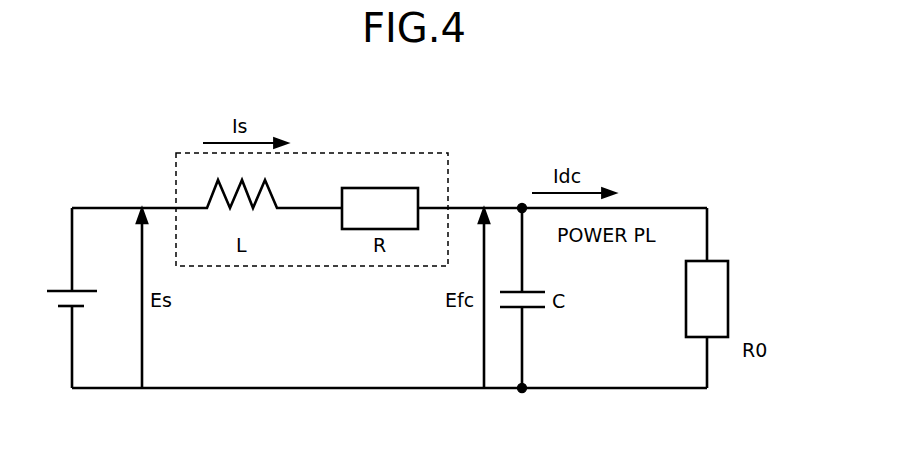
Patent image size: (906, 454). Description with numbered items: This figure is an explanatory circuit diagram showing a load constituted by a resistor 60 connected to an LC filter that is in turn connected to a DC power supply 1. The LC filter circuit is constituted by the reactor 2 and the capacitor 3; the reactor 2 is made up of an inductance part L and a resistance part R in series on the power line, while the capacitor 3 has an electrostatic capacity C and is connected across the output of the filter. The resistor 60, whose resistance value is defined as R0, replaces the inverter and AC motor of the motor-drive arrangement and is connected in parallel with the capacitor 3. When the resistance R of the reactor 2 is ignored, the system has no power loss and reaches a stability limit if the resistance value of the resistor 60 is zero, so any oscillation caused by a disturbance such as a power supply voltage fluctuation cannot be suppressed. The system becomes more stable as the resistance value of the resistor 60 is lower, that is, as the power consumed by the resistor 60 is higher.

The DC power supply 1 is at (83, 290).
The reactor 2 is at (400, 153).
The capacitor 3 is at (535, 292).
The resistor 60 is at (720, 261).